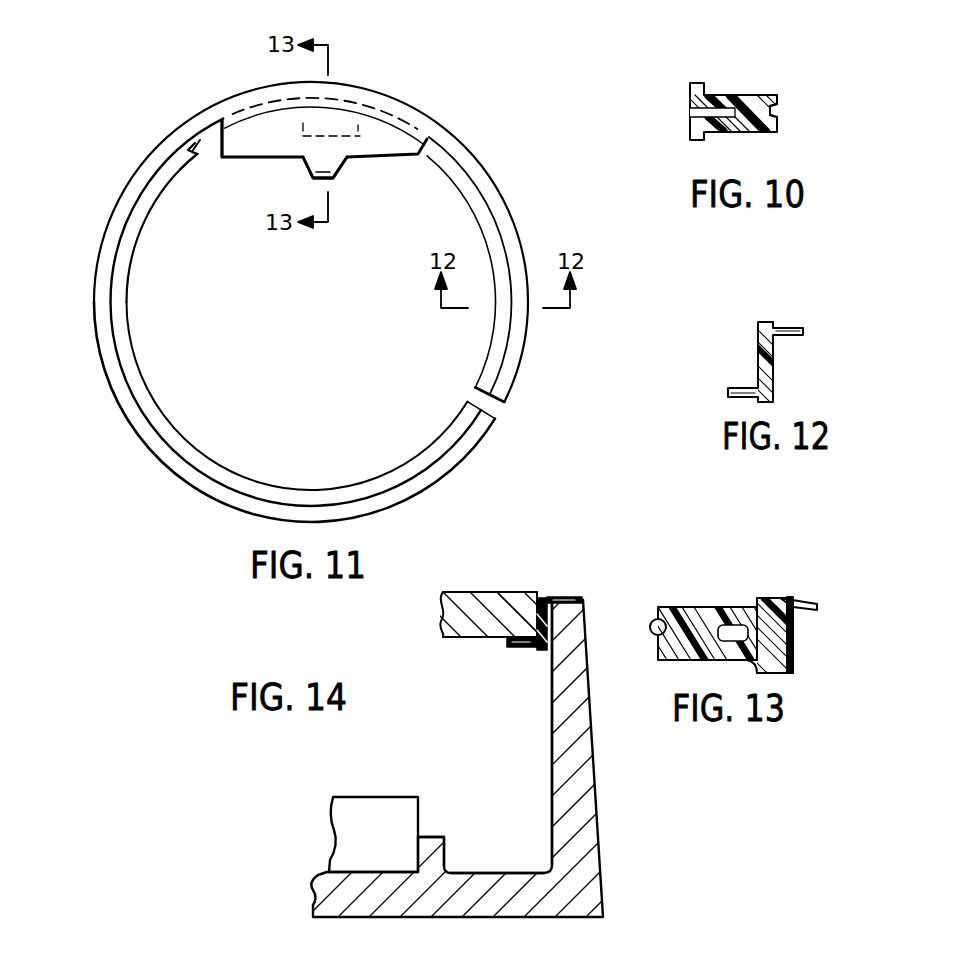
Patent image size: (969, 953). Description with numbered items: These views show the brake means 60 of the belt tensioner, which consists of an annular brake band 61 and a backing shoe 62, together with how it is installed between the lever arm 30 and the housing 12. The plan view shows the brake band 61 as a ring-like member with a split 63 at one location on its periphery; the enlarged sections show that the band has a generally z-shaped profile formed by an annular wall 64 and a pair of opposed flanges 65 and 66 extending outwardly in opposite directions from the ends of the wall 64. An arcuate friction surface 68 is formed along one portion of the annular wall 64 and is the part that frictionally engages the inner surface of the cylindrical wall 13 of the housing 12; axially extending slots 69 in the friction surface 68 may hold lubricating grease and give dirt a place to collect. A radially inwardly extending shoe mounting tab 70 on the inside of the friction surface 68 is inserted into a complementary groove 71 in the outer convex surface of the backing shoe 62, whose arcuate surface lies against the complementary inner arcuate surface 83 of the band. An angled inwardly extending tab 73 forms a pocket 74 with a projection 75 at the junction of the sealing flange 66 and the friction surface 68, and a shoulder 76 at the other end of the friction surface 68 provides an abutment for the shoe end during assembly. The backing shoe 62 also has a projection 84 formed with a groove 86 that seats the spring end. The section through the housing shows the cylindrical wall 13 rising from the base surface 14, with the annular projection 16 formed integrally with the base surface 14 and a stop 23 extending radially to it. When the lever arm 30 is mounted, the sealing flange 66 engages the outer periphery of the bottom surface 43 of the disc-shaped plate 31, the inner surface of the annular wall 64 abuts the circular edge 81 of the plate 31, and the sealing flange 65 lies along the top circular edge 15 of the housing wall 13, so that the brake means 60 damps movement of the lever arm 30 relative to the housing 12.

In FIG. 14, the housing 12 is at (607, 829).
In FIG. 14, the cylindrical wall 13 is at (579, 716).
In FIG. 14, the base surface 14 is at (500, 872).
In FIG. 14, the top circular edge 15 is at (568, 596).
In FIG. 14, the annular-shaped projection 16 is at (435, 852).
In FIG. 14, the stop 23 is at (351, 806).
In FIG. 14, the lever arm 30 is at (433, 608).
In FIG. 14, the disc-shaped plate 31 is at (466, 600).
In FIG. 14, the bottom surface 43 is at (466, 639).
In FIG. 11, the brake means 60 is at (478, 147).
In FIG. 11, the brake band 61 is at (137, 446).
In FIG. 12, the brake band 61 is at (745, 345).
In FIG. 13, the brake band 61 is at (798, 588).
In FIG. 10, the backing shoe 62 is at (778, 81).
In FIG. 11, the split 63 is at (496, 406).
In FIG. 12, the annular wall 64 is at (775, 369).
In FIG. 14, the annular wall 64 is at (549, 621).
In FIG. 11, the sealing flange 65 is at (483, 428).
In FIG. 12, the sealing flange 65 is at (790, 328).
In FIG. 14, the sealing flange 65 is at (562, 597).
In FIG. 11, the sealing flange 66 is at (449, 440).
In FIG. 12, the sealing flange 66 is at (730, 391).
In FIG. 14, the sealing flange 66 is at (520, 650).
In FIG. 11, the friction surface 68 is at (399, 111).
In FIG. 13, the friction surface 68 is at (794, 657).
In FIG. 13, the slots 69 is at (794, 627).
In FIG. 11, the shoe mounting tab 70 is at (333, 127).
In FIG. 13, the shoe mounting tab 70 is at (750, 611).
In FIG. 10, the groove 71 is at (710, 110).
In FIG. 13, the groove 71 is at (735, 627).
In FIG. 11, the tab 73 is at (190, 140).
In FIG. 11, the pocket 74 is at (182, 134).
In FIG. 11, the projection 75 is at (186, 159).
In FIG. 11, the shoulder 76 is at (399, 160).
In FIG. 14, the circular edge 81 is at (512, 600).
In FIG. 11, the inner arcuate surface 83 is at (229, 125).
In FIG. 10, the projection 84 is at (756, 133).
In FIG. 13, the projection 84 is at (704, 633).
In FIG. 10, the groove 86 is at (779, 111).
In FIG. 13, the groove 86 is at (658, 627).